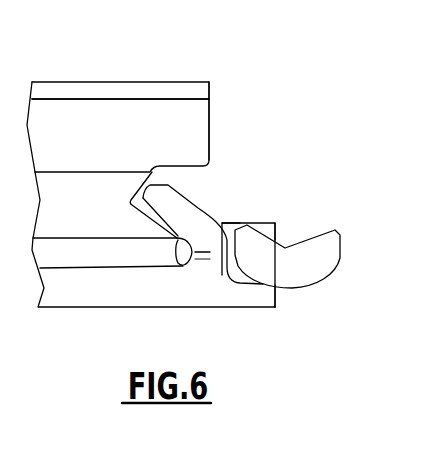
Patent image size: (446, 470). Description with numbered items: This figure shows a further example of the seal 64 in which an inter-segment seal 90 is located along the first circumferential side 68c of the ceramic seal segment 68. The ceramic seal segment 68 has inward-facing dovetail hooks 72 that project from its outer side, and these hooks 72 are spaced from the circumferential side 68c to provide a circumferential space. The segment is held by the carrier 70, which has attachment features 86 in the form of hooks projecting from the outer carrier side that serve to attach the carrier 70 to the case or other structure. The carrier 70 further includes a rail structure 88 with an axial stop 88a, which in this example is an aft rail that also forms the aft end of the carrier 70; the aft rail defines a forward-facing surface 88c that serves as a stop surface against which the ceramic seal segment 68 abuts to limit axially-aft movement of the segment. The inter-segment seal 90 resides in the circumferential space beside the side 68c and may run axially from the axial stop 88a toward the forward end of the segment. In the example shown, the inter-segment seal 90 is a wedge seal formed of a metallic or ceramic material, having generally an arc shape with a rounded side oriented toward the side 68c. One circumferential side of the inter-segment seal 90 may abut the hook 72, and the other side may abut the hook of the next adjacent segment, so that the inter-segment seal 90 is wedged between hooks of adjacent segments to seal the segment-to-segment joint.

The seal 64 is at (277, 117).
The ceramic seal segment 68 is at (150, 304).
The first circumferential side 68c is at (277, 292).
The carrier 70 is at (209, 82).
The inward-facing dovetail hook 72 is at (211, 189).
The attachment feature 86 is at (131, 83).
The block 88 is at (248, 265).
The axial stop 88a is at (238, 222).
The forward-facing surface 88c is at (278, 232).
The inter-segment seal 90 is at (320, 222).